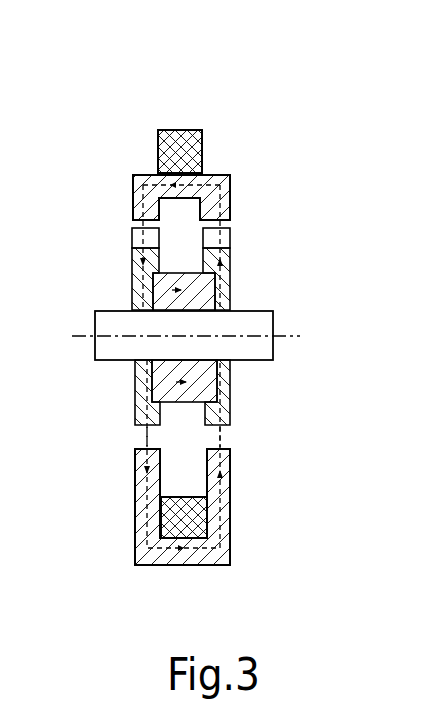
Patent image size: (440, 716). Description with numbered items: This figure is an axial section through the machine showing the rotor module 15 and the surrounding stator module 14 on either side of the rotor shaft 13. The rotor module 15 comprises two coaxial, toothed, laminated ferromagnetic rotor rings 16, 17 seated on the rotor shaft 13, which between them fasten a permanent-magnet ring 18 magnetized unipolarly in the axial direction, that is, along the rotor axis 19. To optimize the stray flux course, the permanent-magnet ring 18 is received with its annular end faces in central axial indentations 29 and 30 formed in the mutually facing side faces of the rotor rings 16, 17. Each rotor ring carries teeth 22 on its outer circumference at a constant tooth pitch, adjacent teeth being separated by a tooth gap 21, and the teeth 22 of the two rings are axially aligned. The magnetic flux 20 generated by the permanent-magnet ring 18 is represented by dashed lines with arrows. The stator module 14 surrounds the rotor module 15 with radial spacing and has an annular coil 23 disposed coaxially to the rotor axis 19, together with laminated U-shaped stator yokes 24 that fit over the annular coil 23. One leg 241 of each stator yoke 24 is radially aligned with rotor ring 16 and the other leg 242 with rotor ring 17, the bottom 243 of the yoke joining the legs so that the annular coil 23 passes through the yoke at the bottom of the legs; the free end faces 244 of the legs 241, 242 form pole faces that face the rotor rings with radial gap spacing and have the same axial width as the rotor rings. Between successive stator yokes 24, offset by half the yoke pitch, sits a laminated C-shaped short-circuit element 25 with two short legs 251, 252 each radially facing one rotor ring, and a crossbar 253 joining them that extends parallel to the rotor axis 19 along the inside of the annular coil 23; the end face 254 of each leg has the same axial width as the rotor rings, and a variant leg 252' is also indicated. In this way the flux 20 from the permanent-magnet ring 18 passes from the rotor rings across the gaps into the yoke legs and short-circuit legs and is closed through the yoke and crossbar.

The rotor shaft 13 is at (250, 348).
The stator module 14 is at (185, 539).
The rotor module 15 is at (177, 271).
The rotor ring 16 is at (232, 297).
The rotor ring 17 is at (133, 272).
The permanent-magnet ring 18 is at (134, 373).
The rotor axis 19 is at (287, 333).
The magnetic flux 20 is at (234, 197).
The tooth gap 21 is at (143, 431).
The teeth 22 is at (132, 238).
The annular coil 23 is at (188, 130).
The stator yoke 24 is at (233, 540).
The short-circuit element 25 is at (165, 116).
The central axial indentation 29 is at (238, 378).
The central axial indentation 30 is at (137, 395).
The leg of stator yoke 241 is at (232, 495).
The leg of stator yoke 242 is at (133, 505).
The bottom of lower yoke 243 is at (208, 562).
The end face 244 is at (135, 448).
The short leg of short-circuit element 251 is at (231, 178).
The short leg of short-circuit element 252 is at (106, 153).
The left arm of upper yoke (variant) 252' is at (17, 701).
The crossbar 253 is at (149, 175).
The end face of short-circuit element leg 254 is at (132, 223).